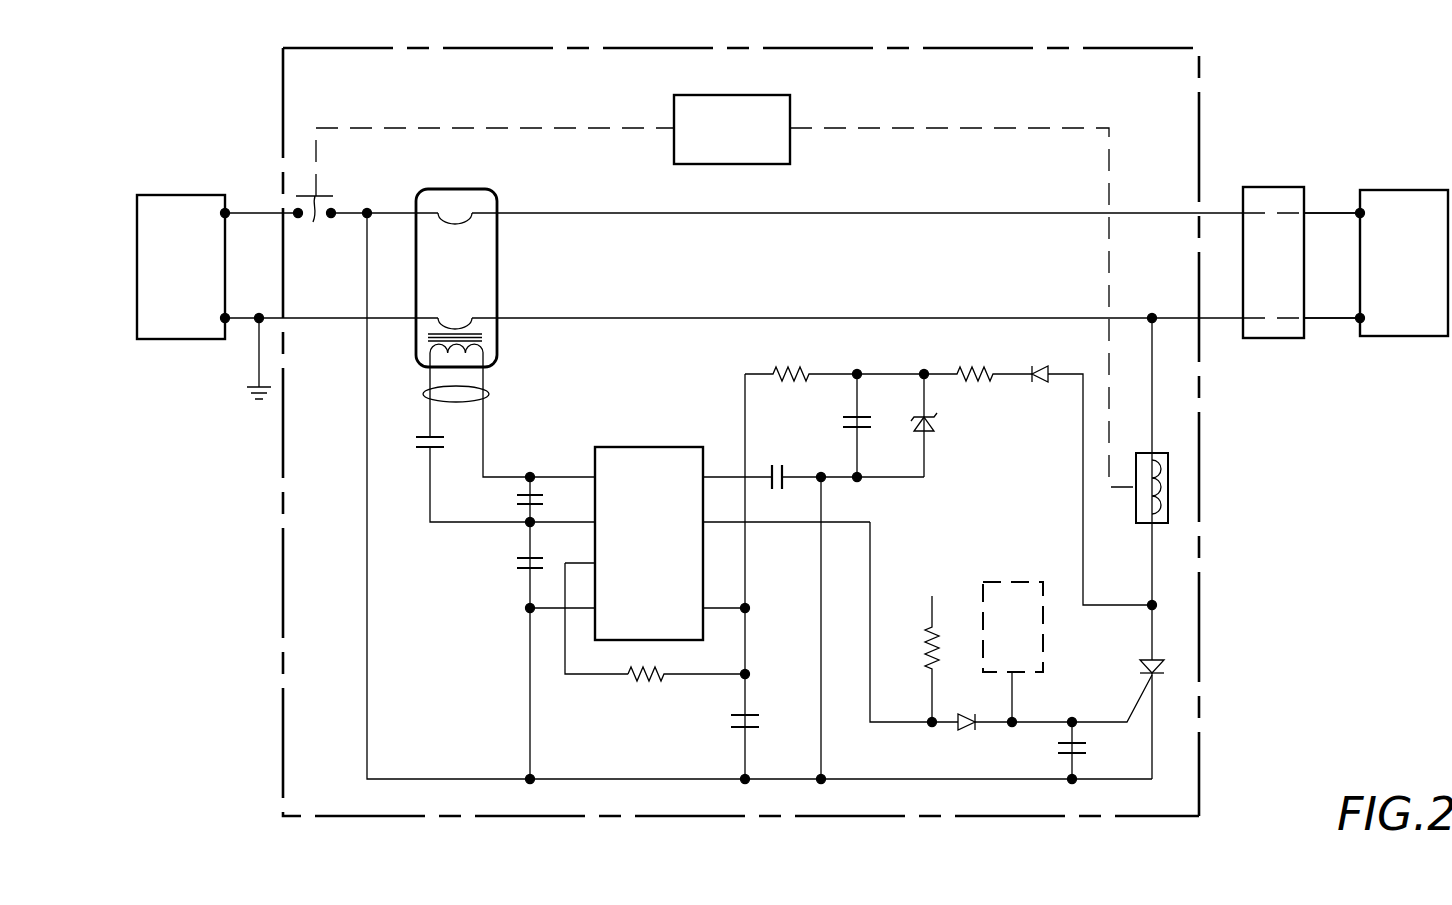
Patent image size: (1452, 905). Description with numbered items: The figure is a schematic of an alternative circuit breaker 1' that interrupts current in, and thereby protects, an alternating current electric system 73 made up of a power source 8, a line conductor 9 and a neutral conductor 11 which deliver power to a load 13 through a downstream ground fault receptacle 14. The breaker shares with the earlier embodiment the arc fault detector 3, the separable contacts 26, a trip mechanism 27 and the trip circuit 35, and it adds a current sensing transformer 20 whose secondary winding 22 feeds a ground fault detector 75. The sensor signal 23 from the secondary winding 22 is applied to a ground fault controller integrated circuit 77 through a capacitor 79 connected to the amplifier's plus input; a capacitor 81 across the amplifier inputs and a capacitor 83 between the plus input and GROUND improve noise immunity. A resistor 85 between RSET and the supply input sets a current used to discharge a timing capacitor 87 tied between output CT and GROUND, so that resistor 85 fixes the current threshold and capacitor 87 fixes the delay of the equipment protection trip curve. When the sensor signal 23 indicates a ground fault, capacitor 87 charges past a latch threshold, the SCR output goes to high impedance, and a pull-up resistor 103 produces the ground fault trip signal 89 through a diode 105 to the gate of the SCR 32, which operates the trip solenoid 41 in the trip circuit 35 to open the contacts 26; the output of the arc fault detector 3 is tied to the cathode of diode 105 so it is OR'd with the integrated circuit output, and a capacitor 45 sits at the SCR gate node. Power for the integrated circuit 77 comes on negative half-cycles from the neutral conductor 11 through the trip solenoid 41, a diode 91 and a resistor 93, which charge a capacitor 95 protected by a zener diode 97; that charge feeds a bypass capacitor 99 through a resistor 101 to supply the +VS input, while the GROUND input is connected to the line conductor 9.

The circuit breaker 1' is at (719, 432).
The arc fault detector 3 is at (1045, 630).
The power source 8 is at (182, 340).
The line conductor 9 is at (245, 212).
The neutral conductor 11 is at (250, 316).
The load 13 is at (1394, 338).
The ground fault receptacle 14 is at (1255, 340).
The current sensing transformer 20 is at (498, 249).
The secondary winding 22 is at (484, 351).
The AC sensor signal 23 is at (424, 394).
The separable contacts 26 is at (315, 229).
The trip mechanism 27 is at (724, 95).
The SCR 32 is at (1158, 680).
The trip circuit 35 is at (690, 72).
The trip solenoid 41 is at (1141, 525).
The capacitor 45 is at (1086, 752).
The AC electric system 73 is at (1358, 150).
The ground fault detector 75 is at (626, 434).
The ground fault controller integrated circuit 77 is at (659, 447).
The capacitor 79 is at (426, 450).
The capacitor 81 is at (518, 498).
The capacitor 83 is at (520, 571).
The resistor 85 is at (660, 678).
The timing capacitor 87 is at (781, 464).
The ground fault trip signal 89 is at (874, 540).
The diode 91 is at (1037, 385).
The resistor 93 is at (993, 371).
The capacitor 95 is at (864, 430).
The zener diode 97 is at (930, 434).
The bypass capacitor 99 is at (752, 730).
The resistor 101 is at (809, 372).
The pull-up resistor 103 is at (925, 648).
The diode 105 is at (968, 732).